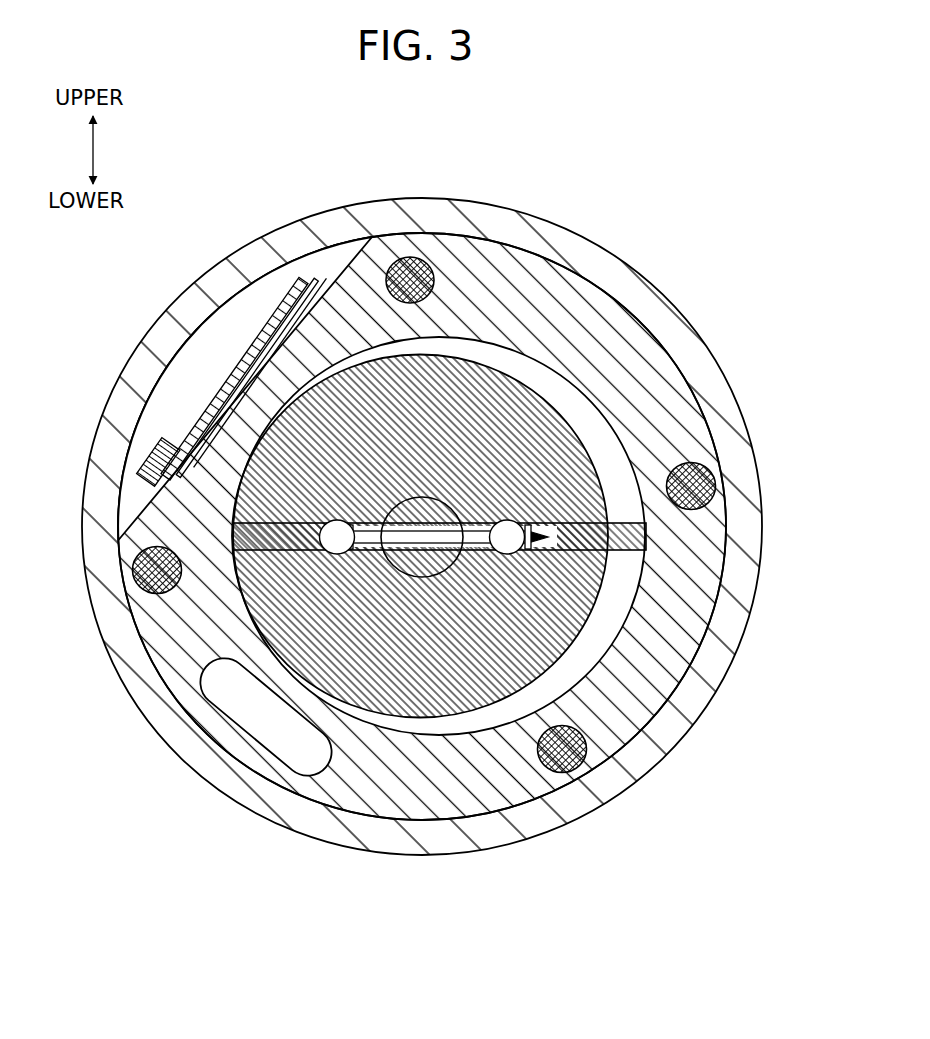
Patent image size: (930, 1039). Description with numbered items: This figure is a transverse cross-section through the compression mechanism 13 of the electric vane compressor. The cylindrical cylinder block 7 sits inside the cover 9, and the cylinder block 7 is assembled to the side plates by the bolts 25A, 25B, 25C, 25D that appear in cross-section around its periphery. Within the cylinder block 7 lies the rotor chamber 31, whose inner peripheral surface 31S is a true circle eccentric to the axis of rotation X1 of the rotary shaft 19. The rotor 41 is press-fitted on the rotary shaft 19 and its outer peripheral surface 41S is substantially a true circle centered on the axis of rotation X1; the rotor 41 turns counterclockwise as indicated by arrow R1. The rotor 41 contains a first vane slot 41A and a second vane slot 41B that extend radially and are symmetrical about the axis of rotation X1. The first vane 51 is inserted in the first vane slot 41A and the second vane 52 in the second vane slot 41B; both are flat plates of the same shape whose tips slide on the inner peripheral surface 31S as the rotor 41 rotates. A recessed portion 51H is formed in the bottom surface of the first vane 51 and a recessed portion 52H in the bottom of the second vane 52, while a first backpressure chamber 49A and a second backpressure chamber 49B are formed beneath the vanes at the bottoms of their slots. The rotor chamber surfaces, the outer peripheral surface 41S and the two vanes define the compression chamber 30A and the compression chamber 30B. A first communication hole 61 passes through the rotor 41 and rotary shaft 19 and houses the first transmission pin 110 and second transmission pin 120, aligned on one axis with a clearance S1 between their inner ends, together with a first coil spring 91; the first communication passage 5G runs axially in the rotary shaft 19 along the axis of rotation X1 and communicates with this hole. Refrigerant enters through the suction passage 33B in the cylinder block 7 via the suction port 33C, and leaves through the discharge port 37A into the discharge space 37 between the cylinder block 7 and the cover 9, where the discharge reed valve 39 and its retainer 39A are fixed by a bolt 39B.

The cylinder block 7 is at (515, 247).
The cover 9 is at (553, 223).
The compression mechanism 13 is at (512, 362).
The rotary shaft 19 is at (520, 440).
The bolt 25A is at (705, 468).
The bolt 25B is at (410, 257).
The bolt 25C is at (148, 592).
The bolt 25D is at (585, 768).
The compression chamber 30A is at (668, 718).
The compression chamber 30B is at (645, 519).
The rotor chamber 31 is at (483, 353).
The inner peripheral surface of the rotor chamber 31S is at (660, 345).
The suction passage 33B is at (262, 760).
The suction port 33C is at (243, 620).
The discharge space 37 is at (214, 384).
The discharge port 37A is at (285, 350).
The discharge reed valve 39 is at (291, 308).
The retainer 39A is at (291, 287).
The bolt 39B is at (150, 440).
The rotor 41 is at (445, 725).
The first vane slot 41A is at (283, 625).
The second vane slot 41B is at (600, 665).
The outer peripheral surface of the rotor 41S is at (397, 720).
The first backpressure chamber 49A is at (210, 430).
The second backpressure chamber 49B is at (672, 362).
The first vane 51 is at (215, 522).
The recessed portion 51H is at (313, 555).
The second vane 52 is at (628, 552).
The recessed portion 52H is at (612, 672).
The first communication passage 5G is at (565, 805).
The first communication hole 61 is at (548, 470).
The first coil spring 91 is at (265, 716).
The first transmission pin 110 is at (337, 735).
The second transmission pin 120 is at (520, 518).
The arrow indicating rotation direction R1 is at (563, 572).
The clearance S1 is at (475, 515).
The axis of rotation X1 is at (529, 373).